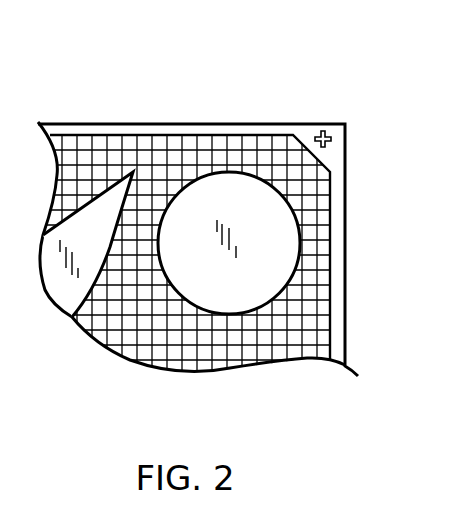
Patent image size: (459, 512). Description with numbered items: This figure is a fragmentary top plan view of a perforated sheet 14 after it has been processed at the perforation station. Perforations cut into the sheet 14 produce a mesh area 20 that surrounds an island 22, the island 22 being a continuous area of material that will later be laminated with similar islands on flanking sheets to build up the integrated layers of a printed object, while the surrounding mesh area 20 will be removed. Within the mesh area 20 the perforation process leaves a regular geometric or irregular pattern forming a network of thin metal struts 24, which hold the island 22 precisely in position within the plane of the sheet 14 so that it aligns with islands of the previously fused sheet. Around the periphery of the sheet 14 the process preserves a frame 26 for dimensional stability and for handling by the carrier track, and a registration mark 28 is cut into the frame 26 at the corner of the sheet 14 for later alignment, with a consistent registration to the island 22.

The sheet 14 is at (186, 124).
The mesh area 20 is at (304, 297).
The island 22 is at (200, 200).
The strut 24 is at (307, 323).
The frame 26 is at (242, 125).
The registration mark 28 is at (328, 146).